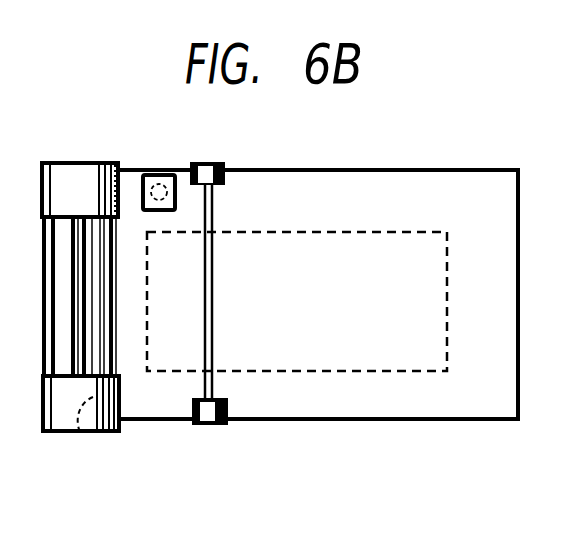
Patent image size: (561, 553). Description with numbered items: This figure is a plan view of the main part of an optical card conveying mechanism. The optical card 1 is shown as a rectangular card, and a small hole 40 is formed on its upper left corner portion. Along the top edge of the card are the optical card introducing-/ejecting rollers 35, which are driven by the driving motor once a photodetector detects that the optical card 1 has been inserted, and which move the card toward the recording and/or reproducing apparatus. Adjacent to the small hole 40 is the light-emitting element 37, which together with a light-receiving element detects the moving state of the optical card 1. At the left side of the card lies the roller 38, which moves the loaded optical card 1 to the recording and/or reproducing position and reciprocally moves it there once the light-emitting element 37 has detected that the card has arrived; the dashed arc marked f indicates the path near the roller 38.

The optical card 1 is at (452, 178).
The optical card introducing-/ejecting rollers 35 is at (210, 163).
The light-emitting element 37 is at (162, 180).
The roller 38 is at (82, 170).
The small hole 40 is at (155, 177).
The pivot path f is at (80, 432).